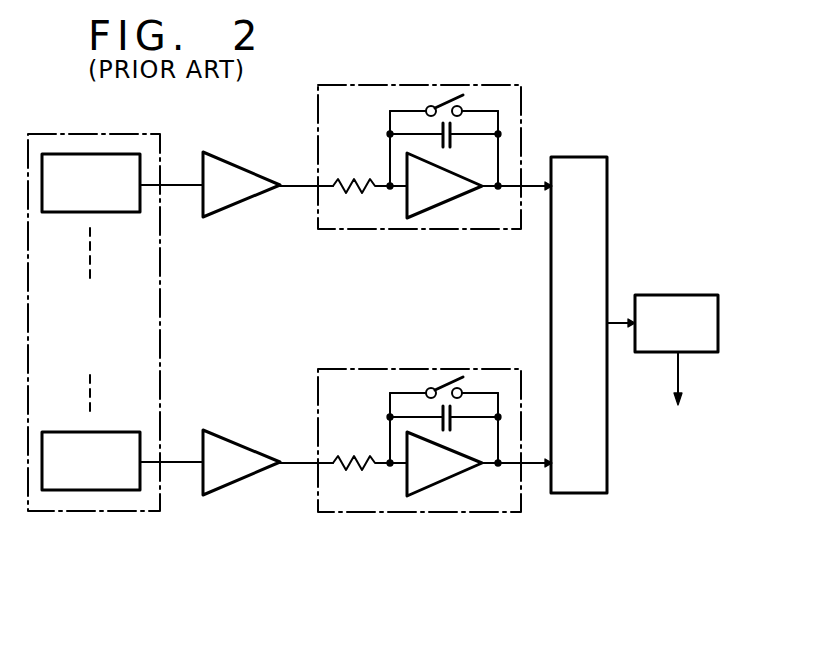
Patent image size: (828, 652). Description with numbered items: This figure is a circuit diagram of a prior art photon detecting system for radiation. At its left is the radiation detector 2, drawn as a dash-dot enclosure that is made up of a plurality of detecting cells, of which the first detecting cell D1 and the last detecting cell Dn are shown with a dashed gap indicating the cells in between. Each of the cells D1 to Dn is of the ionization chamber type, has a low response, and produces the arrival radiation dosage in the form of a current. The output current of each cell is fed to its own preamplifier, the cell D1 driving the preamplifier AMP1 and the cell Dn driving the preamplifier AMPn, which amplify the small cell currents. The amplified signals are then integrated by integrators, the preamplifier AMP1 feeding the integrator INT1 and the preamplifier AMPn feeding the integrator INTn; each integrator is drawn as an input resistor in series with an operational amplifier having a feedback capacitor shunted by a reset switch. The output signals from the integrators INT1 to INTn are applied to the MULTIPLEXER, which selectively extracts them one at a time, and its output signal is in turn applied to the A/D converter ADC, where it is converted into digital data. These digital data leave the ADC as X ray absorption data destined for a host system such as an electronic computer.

The radiation detector 2 is at (148, 348).
The detecting cell D1 is at (116, 207).
The detecting cell Dn is at (118, 445).
The preamplifier AMP1 is at (233, 198).
The preamplifier AMPn is at (244, 452).
The integrator INT1 is at (418, 230).
The integrator INTn is at (413, 368).
The multiplexer MULTIPLEXER is at (579, 325).
The A/D converter ADC is at (676, 323).